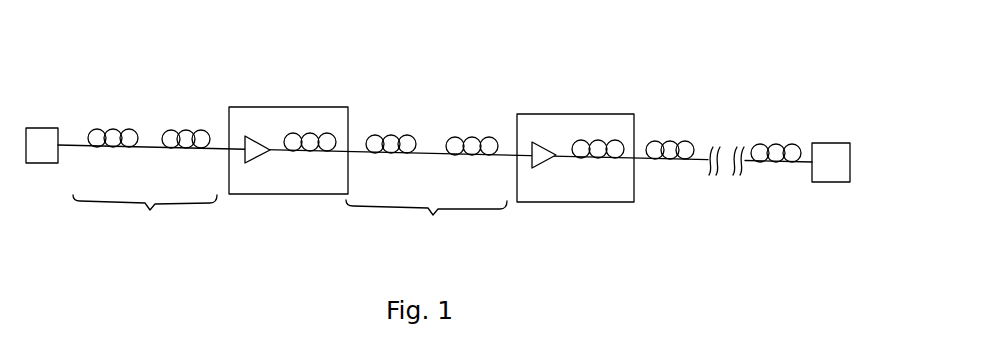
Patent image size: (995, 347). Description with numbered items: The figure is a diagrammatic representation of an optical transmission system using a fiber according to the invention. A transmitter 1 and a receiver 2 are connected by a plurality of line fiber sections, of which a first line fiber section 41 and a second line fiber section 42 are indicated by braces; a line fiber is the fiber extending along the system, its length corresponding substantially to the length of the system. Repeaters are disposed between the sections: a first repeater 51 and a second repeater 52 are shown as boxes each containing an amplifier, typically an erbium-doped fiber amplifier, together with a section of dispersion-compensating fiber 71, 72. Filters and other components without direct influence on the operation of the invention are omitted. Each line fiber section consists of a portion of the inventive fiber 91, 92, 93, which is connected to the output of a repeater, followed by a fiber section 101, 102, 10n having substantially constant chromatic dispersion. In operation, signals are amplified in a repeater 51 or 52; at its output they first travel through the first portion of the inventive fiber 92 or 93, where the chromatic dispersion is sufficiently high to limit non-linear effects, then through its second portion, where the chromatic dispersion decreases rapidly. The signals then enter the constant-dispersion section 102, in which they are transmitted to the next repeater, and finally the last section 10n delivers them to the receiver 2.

The transmitter 1 is at (45, 128).
The receiver 2 is at (830, 143).
The first line fiber section 41 is at (145, 221).
The second line fiber section 42 is at (426, 228).
The first repeater 51 is at (288, 107).
The second repeater 52 is at (575, 114).
The dispersion-compensating fiber section 71 is at (308, 152).
The dispersion-compensating fiber section 72 is at (600, 158).
The line fiber section of the invention fiber 91 is at (115, 130).
The line fiber section of the invention fiber 92 is at (393, 135).
The line fiber section of the invention fiber 93 is at (668, 141).
The fiber section having substantially constant chromatic dispersion 101 is at (186, 131).
The fiber section having substantially constant chromatic dispersion 102 is at (472, 137).
The fiber section having substantially constant chromatic dispersion 10n is at (776, 163).